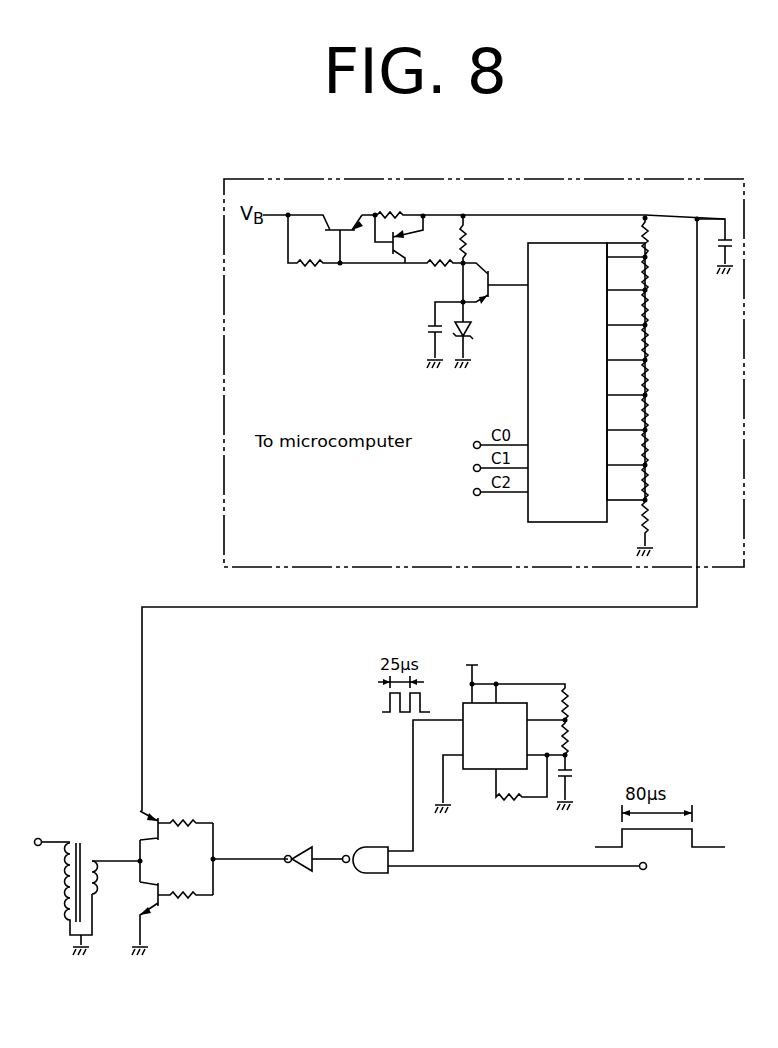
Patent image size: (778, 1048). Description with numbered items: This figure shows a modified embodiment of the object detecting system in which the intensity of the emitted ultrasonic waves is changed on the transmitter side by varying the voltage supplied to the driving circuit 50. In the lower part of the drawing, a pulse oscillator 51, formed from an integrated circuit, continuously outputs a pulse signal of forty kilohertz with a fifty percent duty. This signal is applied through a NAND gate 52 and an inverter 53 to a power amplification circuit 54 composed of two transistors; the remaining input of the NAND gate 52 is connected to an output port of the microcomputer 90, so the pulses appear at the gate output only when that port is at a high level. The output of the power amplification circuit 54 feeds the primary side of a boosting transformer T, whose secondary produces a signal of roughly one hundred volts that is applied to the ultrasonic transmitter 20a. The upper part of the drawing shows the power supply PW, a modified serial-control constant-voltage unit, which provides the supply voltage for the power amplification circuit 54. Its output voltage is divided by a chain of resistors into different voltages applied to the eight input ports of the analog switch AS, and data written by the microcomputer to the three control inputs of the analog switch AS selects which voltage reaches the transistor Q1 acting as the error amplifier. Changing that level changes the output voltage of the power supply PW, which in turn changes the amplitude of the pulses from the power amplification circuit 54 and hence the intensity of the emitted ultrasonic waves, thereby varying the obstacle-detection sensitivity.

The power supply PW is at (516, 177).
The transistor Q1 is at (490, 298).
The analog switch AS is at (548, 522).
The ultrasonic transmitter 20a is at (53, 695).
The boosting transformer T is at (71, 840).
The power amplification circuit 54 is at (205, 822).
The driving circuit 50 is at (306, 798).
The inverter 53 is at (301, 873).
The NAND gate 52 is at (373, 867).
The pulse oscillator 51 is at (512, 684).
The microcomputer 90 is at (581, 880).